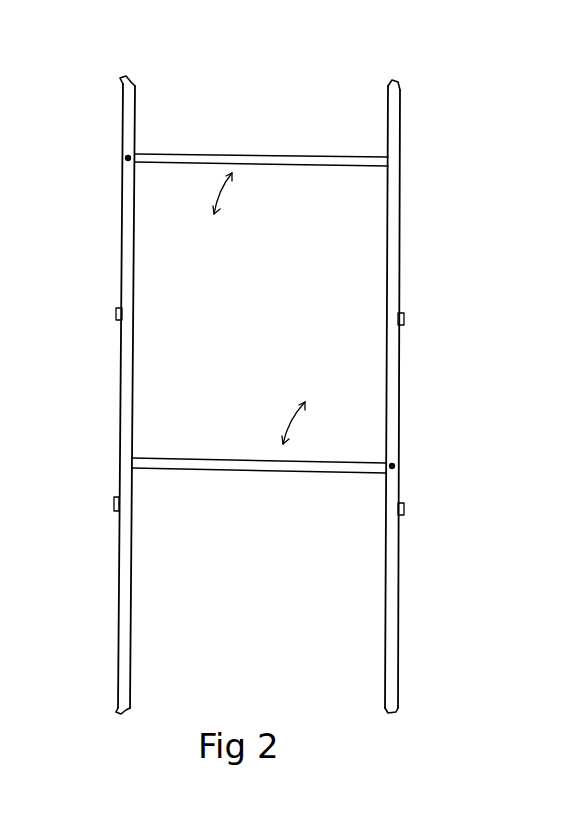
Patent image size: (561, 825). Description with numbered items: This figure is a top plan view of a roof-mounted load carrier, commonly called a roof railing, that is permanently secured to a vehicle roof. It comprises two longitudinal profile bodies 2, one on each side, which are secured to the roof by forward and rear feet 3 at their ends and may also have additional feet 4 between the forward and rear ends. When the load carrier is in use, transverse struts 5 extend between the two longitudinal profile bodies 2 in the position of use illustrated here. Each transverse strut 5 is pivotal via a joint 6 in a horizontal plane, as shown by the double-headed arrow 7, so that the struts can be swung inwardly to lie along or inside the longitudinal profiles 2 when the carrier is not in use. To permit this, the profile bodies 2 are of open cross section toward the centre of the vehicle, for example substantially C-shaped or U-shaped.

The longitudinal profile body 2 is at (128, 236).
The forward and rear feet 3 is at (128, 82).
The additional feet 4 is at (405, 319).
The transverse strut 5 is at (322, 163).
The joint 6 is at (128, 158).
The double-headed arrow 7 is at (268, 308).